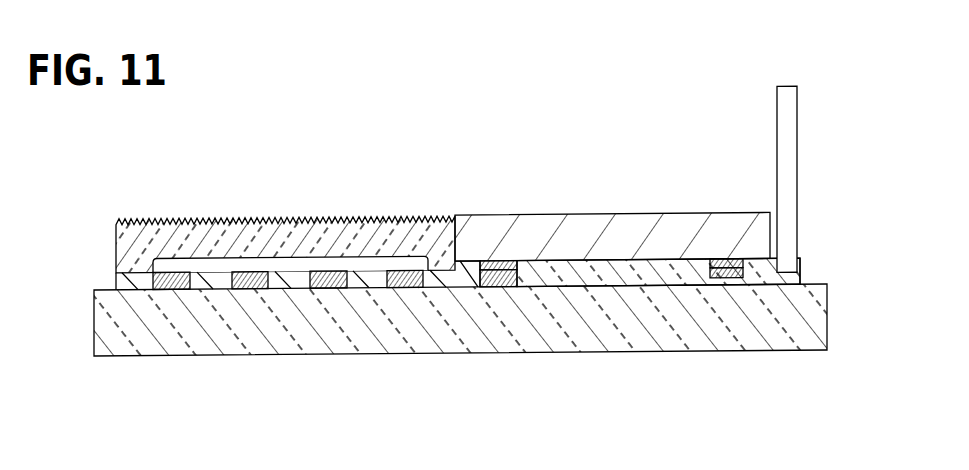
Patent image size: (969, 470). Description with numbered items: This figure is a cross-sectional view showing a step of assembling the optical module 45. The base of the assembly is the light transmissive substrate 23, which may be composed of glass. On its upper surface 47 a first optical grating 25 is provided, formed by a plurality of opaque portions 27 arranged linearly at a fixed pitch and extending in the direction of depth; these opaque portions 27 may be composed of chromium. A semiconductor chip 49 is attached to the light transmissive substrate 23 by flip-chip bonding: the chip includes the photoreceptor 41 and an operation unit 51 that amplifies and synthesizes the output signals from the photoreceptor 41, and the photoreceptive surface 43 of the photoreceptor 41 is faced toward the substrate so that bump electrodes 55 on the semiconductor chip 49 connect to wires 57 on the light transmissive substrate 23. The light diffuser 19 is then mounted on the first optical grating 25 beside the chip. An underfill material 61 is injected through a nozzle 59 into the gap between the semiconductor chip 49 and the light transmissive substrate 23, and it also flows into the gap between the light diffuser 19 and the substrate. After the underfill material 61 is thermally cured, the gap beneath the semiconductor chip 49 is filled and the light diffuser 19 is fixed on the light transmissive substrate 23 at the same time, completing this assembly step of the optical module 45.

The optical module 45 is at (877, 52).
The light diffuser 19 is at (116, 258).
The first optical grating 25 is at (287, 257).
The opaque portions 27 is at (175, 291).
The underfill material 61 is at (288, 292).
The light transmissive substrate 23 is at (827, 329).
The photoreceptive surface 43 is at (581, 265).
The upper surface 47 is at (805, 288).
The semiconductor chip 49 is at (612, 203).
The photoreceptor 41 is at (612, 236).
The operation unit 51 is at (618, 234).
The bump electrodes 55 is at (498, 266).
The wires 57 is at (495, 290).
The nozzle 59 is at (798, 154).